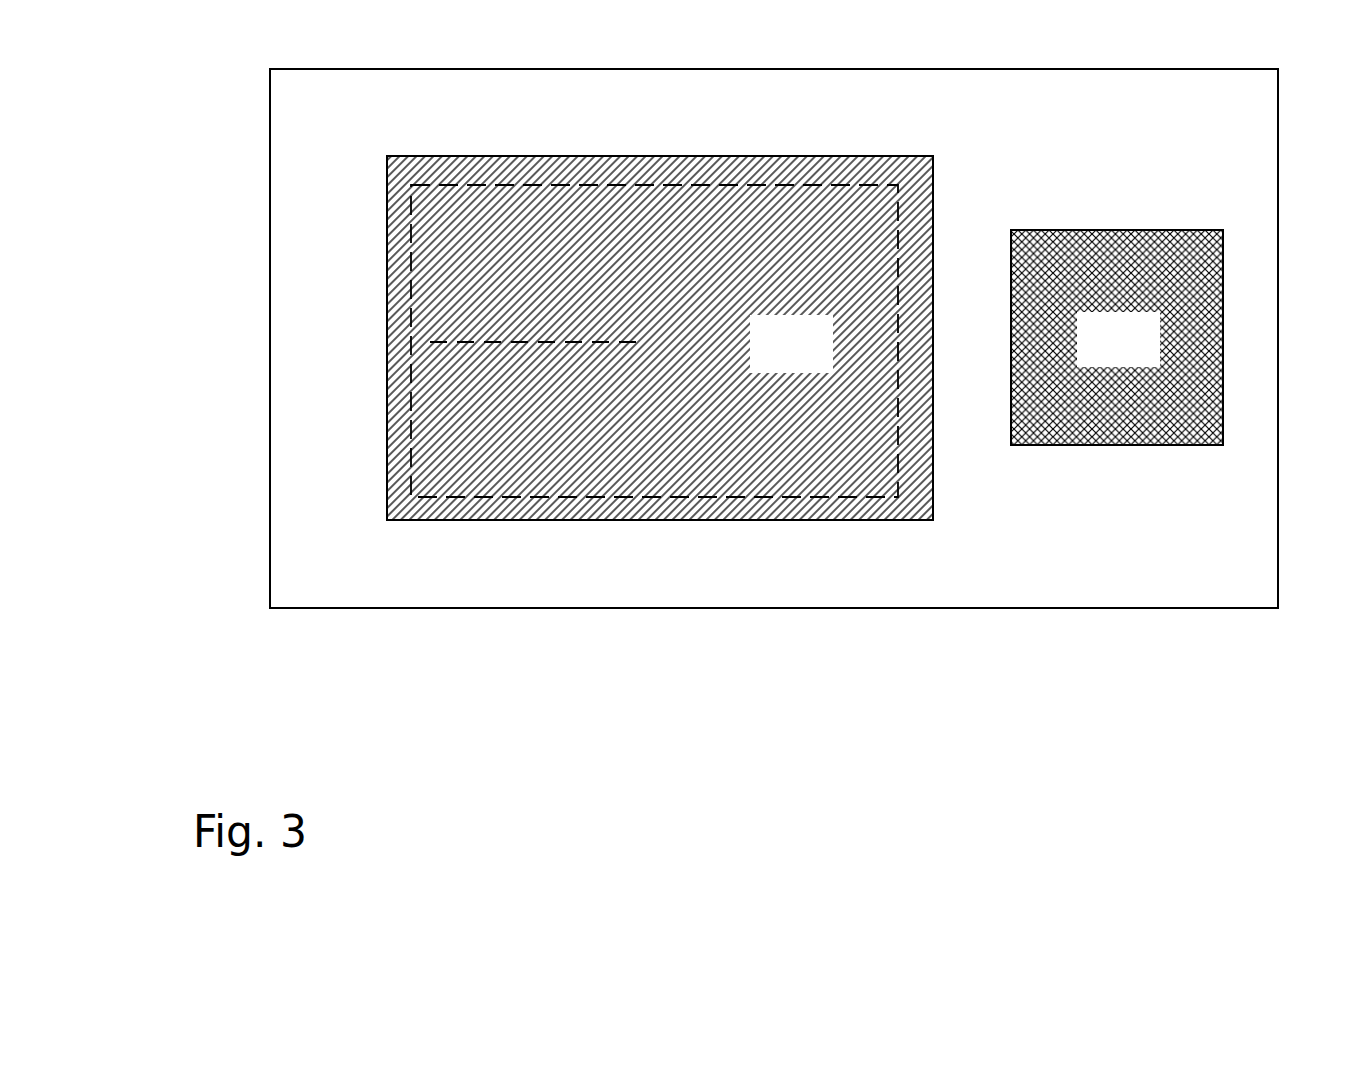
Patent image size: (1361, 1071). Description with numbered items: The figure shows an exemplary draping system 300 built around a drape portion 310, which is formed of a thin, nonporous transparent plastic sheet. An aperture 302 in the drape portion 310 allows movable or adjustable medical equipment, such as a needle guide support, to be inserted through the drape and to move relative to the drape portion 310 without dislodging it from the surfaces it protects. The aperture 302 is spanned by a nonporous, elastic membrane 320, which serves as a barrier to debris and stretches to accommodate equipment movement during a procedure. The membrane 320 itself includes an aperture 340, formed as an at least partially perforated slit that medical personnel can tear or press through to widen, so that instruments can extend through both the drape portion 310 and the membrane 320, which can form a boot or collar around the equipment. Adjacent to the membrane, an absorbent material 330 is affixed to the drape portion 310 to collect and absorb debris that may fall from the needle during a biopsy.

The draping system 300 is at (1223, 635).
The aperture 302 is at (768, 184).
The drape portion 310 is at (1138, 140).
The nonporous, elastic membrane 320 is at (813, 356).
The absorbent material 330 is at (1139, 348).
The aperture 340 is at (448, 325).